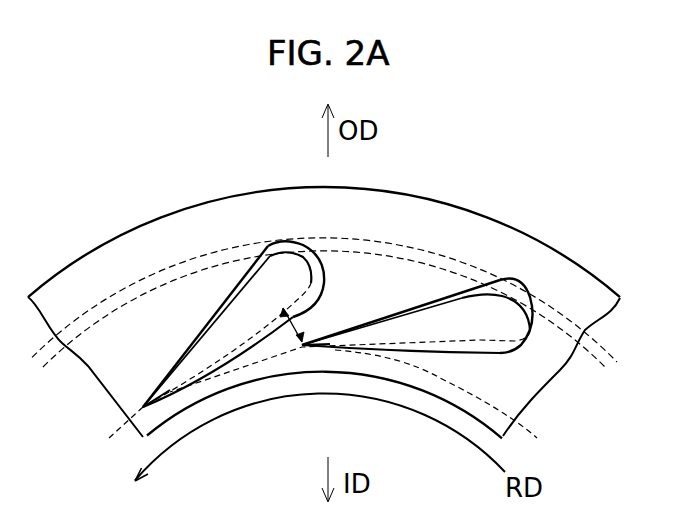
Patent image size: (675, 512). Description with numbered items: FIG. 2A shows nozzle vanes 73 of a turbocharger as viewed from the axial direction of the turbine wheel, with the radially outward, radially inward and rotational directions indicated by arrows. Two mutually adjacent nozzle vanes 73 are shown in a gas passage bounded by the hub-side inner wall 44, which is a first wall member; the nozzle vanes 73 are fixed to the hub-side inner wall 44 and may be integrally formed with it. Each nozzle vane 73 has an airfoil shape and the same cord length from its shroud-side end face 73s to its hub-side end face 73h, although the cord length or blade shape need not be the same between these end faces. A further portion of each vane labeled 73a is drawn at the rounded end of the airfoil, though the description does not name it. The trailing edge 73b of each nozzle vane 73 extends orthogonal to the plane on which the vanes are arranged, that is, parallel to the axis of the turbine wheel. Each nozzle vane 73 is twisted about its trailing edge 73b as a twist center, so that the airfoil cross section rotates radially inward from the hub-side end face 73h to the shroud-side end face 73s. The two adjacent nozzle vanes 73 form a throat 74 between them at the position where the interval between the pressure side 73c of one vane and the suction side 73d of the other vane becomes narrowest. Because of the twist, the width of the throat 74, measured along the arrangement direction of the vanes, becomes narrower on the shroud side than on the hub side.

The hub-side inner wall 44 is at (420, 225).
The nozzle vane 73 is at (275, 255).
The blade tip end 73a is at (311, 273).
The trailing edge 73b is at (141, 408).
The pressure side 73c is at (270, 262).
The suction side 73d is at (255, 355).
The hub-side end face 73h is at (212, 318).
The shroud-side end face 73s is at (243, 338).
The throat 74 is at (290, 335).